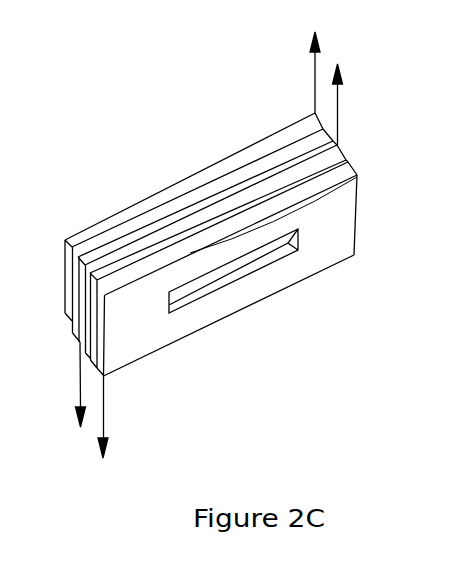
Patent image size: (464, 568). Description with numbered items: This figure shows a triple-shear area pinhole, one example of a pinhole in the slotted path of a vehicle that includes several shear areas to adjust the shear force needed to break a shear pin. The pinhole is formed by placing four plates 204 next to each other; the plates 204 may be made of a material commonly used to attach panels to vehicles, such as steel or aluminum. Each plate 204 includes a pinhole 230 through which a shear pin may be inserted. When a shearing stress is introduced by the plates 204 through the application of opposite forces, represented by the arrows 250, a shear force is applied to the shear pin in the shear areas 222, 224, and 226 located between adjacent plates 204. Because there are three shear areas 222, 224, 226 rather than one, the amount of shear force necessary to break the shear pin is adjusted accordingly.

The plate 204 is at (104, 295).
The shear area 222 is at (312, 184).
The shear area 224 is at (317, 163).
The shear area 226 is at (323, 131).
The pinhole 230 is at (299, 245).
The arrows 250 is at (319, 52).